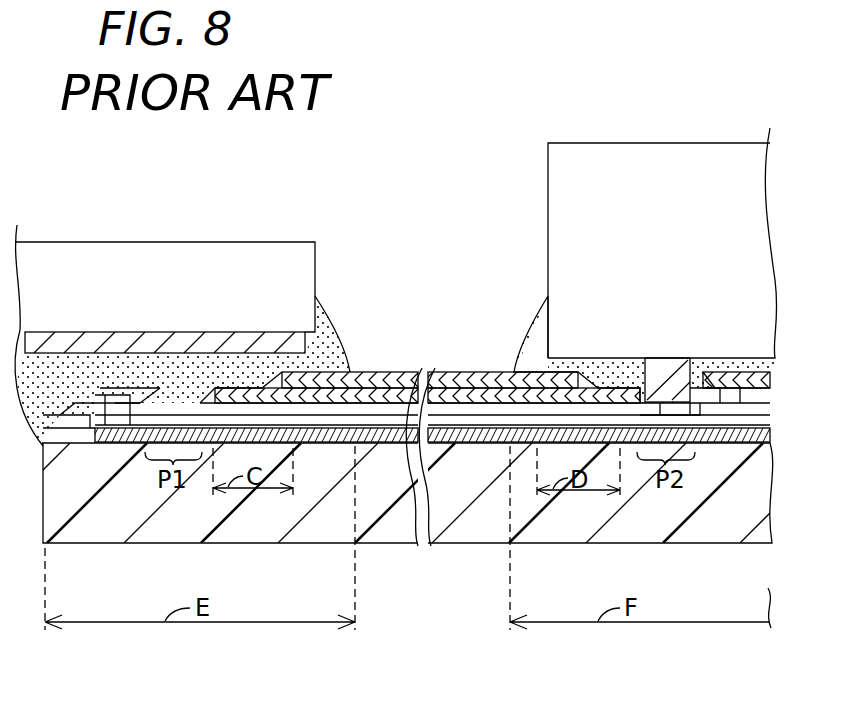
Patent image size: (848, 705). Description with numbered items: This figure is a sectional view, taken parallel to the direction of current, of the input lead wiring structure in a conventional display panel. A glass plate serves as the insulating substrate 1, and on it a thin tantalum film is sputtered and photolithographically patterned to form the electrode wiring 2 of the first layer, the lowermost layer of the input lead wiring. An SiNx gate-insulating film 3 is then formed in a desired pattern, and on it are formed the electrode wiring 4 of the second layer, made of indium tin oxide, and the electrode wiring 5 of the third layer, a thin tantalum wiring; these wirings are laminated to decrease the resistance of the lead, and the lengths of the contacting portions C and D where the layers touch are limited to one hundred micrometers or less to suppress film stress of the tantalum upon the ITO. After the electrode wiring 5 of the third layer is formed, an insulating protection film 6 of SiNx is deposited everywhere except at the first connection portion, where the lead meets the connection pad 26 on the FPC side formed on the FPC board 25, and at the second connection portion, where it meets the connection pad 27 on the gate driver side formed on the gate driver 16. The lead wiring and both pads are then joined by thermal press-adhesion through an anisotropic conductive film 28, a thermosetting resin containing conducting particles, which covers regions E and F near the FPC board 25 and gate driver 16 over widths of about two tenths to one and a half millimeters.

The insulating substrate 1 is at (81, 510).
The electrode wiring of a first layer 2 is at (325, 446).
The gate-insulating film 3 is at (358, 446).
The electrode wiring of a second layer 4 is at (477, 446).
The electrode wiring of a third layer 5 is at (475, 377).
The insulating protection film 6 is at (385, 375).
The gate driver 16 is at (727, 157).
The FPC board 25 is at (80, 256).
The connection pad on the FPC side 26 is at (228, 330).
The connection pad on the gate driver side 27 is at (661, 372).
The anisotropic conductive film 28 is at (525, 326).